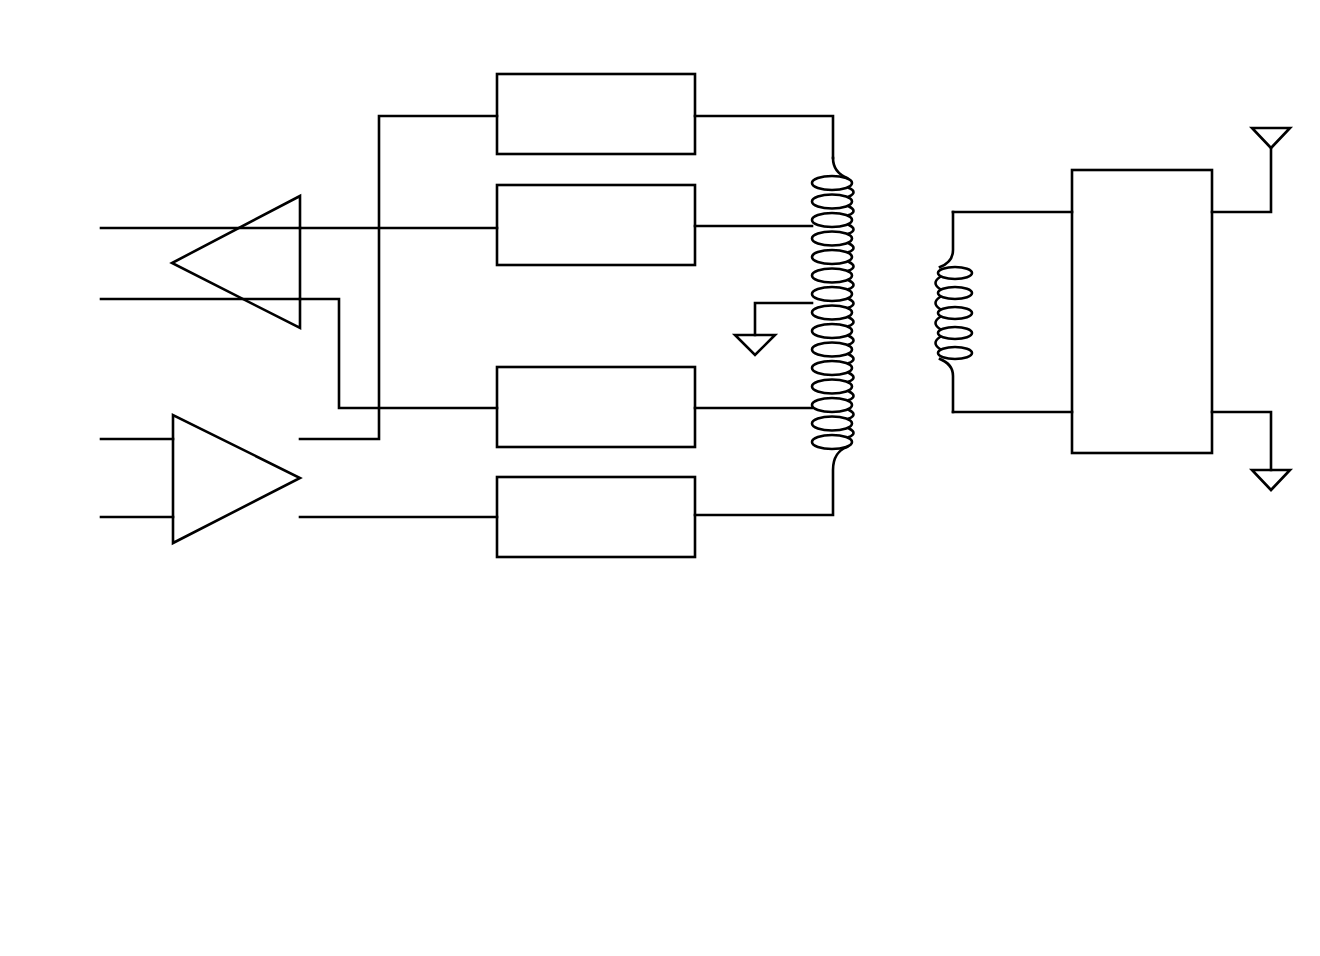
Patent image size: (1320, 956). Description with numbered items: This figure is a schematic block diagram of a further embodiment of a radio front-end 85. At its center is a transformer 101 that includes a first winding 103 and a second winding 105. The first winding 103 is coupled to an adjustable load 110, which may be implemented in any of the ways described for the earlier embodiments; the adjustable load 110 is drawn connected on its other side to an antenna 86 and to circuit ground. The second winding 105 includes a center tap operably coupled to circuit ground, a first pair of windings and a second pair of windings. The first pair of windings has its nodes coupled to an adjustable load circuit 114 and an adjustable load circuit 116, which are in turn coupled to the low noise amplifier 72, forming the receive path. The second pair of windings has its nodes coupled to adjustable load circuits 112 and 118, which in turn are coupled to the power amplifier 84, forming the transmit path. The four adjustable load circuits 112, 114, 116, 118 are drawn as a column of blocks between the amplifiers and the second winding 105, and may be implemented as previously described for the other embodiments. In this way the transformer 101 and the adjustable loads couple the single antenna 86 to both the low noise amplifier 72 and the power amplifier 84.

The low noise amplifier 72 is at (200, 262).
The power amplifier 84 is at (200, 479).
The radio front-end 85 is at (695, 448).
The antenna 86 is at (1251, 153).
The transformer 101 is at (887, 330).
The first winding 103 is at (1007, 352).
The second winding 105 is at (791, 271).
The adjustable load 110 is at (1142, 311).
The adjustable load circuit 112 is at (596, 114).
The adjustable load circuit 114 is at (596, 225).
The adjustable load circuit 116 is at (596, 407).
The adjustable load circuit 118 is at (596, 517).